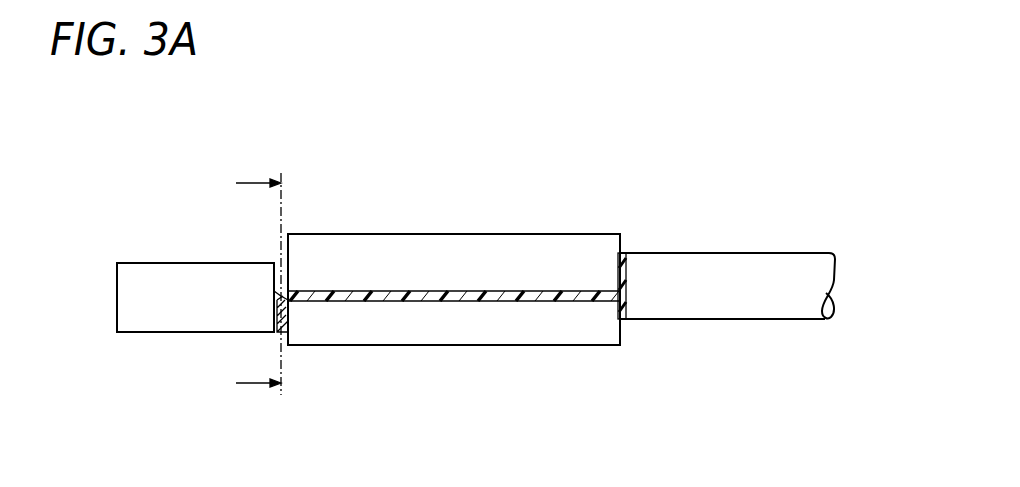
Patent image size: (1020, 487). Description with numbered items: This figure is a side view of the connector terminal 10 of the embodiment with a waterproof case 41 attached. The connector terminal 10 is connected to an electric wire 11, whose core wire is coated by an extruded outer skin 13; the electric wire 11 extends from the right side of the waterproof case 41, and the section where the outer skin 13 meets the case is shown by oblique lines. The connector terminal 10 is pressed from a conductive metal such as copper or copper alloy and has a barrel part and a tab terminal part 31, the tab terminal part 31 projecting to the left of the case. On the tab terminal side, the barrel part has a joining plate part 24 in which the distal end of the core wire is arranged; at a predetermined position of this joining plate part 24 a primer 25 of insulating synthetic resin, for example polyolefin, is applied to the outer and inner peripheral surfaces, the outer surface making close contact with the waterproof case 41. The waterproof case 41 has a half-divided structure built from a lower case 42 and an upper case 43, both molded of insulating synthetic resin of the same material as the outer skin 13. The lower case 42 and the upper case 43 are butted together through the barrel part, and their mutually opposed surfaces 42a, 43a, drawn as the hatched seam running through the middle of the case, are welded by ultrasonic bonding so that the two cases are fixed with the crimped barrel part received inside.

The connector terminal 10 is at (234, 219).
The electric wire 11 is at (809, 240).
The outer skin 13 is at (722, 253).
The joining plate part 24 is at (281, 332).
The primer 25 is at (277, 321).
The tab terminal part 31 is at (159, 256).
The waterproof case 41 is at (530, 226).
The lower case 42 is at (573, 330).
The opposed surface 42a is at (415, 297).
The upper case 43 is at (590, 243).
The opposed surface 43a is at (474, 300).